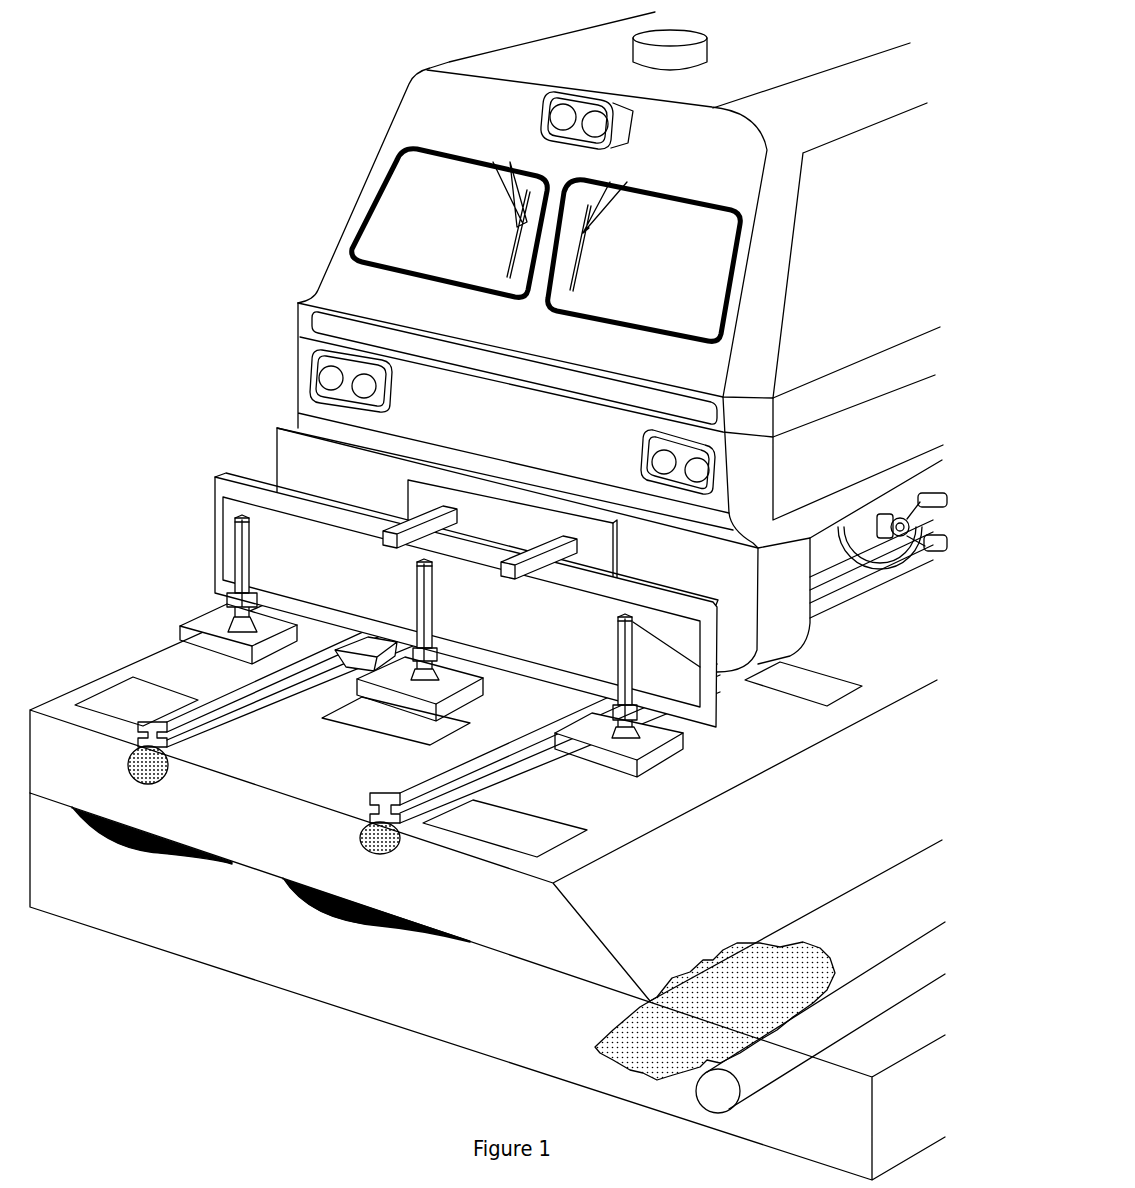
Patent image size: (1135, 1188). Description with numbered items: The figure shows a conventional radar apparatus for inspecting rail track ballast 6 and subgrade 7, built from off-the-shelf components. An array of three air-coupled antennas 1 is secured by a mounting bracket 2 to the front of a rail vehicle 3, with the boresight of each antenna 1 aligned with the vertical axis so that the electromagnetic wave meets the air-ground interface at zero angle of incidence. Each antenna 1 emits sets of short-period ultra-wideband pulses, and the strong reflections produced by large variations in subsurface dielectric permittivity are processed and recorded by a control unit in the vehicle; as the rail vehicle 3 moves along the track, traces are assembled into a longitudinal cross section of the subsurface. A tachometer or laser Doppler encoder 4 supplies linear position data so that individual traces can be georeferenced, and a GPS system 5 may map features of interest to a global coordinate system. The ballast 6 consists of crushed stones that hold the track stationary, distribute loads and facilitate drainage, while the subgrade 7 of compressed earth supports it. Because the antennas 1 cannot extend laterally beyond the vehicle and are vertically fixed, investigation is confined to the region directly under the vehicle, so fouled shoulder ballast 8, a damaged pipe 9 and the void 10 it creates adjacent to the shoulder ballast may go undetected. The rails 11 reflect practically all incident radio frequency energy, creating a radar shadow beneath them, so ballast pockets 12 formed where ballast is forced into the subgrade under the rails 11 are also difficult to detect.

The air-coupled antenna 1 is at (197, 643).
The mounting bracket 2 is at (217, 530).
The rail vehicle 3 is at (287, 468).
The laser Doppler encoder 4 is at (363, 650).
The GPS system 5 is at (650, 58).
The ballast 6 is at (72, 743).
The subgrade 7 is at (72, 895).
The shoulder ballast 8 is at (880, 730).
The damaged pipe 9 is at (713, 1090).
The void 10 is at (643, 1063).
The rail 11 is at (147, 762).
The ballast pocket 12 is at (170, 853).